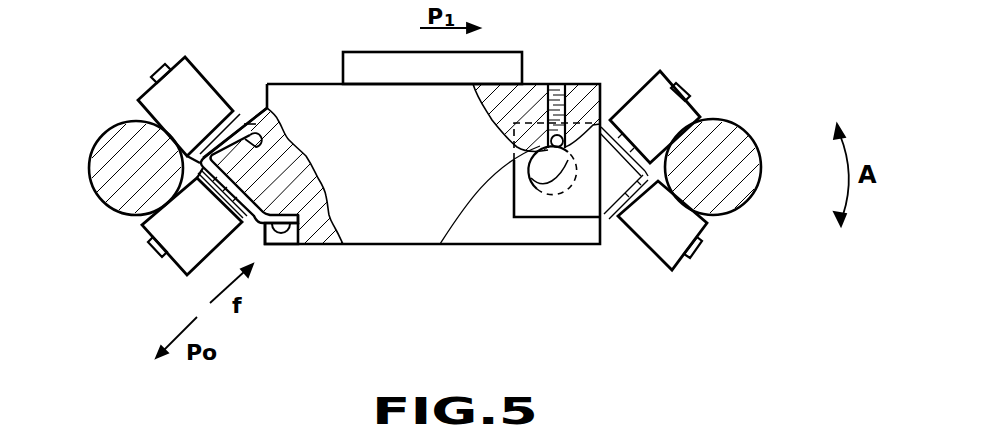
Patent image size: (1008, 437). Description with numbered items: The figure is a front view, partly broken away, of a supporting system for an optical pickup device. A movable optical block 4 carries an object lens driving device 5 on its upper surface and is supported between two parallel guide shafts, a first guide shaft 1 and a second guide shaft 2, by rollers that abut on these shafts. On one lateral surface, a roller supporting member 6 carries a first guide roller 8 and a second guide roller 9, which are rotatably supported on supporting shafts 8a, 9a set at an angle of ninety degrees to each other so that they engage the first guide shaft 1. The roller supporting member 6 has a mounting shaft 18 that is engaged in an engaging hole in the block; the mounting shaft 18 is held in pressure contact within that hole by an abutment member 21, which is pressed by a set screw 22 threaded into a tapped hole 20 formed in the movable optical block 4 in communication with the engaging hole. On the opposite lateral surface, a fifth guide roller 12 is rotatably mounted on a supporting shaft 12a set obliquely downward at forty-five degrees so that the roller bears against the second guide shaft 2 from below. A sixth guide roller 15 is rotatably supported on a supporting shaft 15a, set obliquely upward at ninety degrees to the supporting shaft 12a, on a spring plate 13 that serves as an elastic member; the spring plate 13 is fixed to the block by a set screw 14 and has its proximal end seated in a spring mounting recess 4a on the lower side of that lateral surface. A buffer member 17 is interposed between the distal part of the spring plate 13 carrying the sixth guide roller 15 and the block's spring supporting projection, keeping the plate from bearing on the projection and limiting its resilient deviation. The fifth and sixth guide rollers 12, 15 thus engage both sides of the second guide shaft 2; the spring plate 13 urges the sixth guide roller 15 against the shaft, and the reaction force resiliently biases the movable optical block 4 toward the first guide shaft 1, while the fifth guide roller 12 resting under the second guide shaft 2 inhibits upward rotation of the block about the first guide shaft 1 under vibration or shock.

The first guide shaft 1 is at (754, 191).
The second guide shaft 2 is at (95, 188).
The movable optical block 4 is at (522, 233).
The spring mounting recess 4a is at (300, 230).
The object lens driving device 5 is at (522, 67).
The roller supporting member 6 is at (560, 210).
The first guide roller 8 is at (647, 237).
The supporting shaft 8a is at (705, 254).
The second guide roller 9 is at (647, 80).
The supporting shaft 9a is at (690, 85).
The fifth guide roller 12 is at (183, 268).
The supporting shaft 12a is at (150, 247).
The spring plate 13 is at (256, 226).
The set screw 14 is at (283, 236).
The sixth guide roller 15 is at (150, 104).
The supporting shaft 15a is at (160, 63).
The buffer member 17 is at (247, 140).
The mounting shaft 18 is at (532, 172).
The tapped hole 20 is at (553, 90).
The abutment member 21 is at (440, 244).
The set screw 22 is at (567, 106).